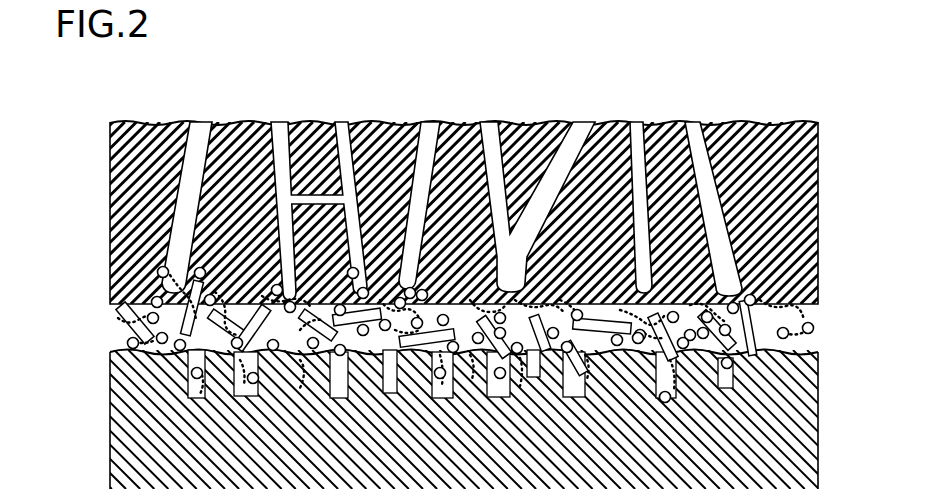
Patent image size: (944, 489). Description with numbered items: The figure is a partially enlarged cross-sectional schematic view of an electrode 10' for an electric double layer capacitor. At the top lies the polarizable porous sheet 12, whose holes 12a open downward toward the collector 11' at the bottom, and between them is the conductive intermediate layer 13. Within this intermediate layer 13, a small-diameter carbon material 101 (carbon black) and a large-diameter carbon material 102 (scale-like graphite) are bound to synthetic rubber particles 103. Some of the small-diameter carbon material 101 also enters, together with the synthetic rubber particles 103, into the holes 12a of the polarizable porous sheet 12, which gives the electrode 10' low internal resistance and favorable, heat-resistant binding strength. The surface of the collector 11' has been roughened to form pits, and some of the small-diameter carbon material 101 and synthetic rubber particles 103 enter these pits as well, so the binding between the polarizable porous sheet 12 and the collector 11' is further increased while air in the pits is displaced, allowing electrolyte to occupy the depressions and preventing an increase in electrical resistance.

The electrode 10' is at (472, 269).
The collector 11' is at (472, 420).
The polarizable porous sheet 12 is at (795, 152).
The holes 12a is at (638, 120).
The conductive intermediate layer 13 is at (120, 333).
The small-diameter carbon material 101 is at (742, 288).
The large-diameter carbon material 102 is at (804, 361).
The synthetic rubber particles 103 is at (810, 324).